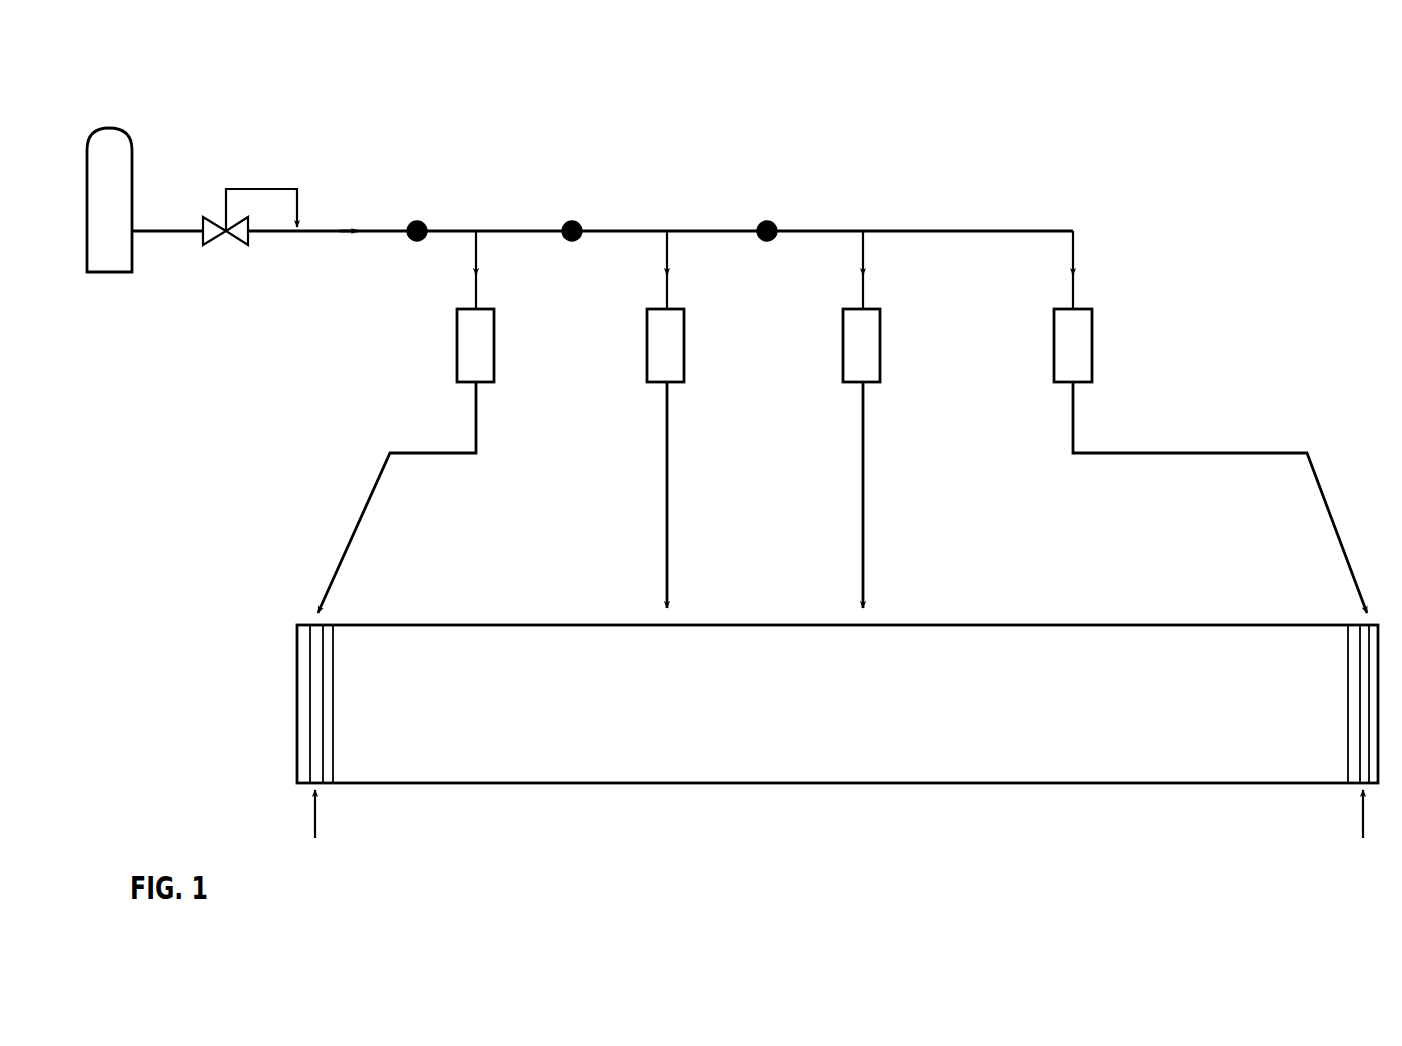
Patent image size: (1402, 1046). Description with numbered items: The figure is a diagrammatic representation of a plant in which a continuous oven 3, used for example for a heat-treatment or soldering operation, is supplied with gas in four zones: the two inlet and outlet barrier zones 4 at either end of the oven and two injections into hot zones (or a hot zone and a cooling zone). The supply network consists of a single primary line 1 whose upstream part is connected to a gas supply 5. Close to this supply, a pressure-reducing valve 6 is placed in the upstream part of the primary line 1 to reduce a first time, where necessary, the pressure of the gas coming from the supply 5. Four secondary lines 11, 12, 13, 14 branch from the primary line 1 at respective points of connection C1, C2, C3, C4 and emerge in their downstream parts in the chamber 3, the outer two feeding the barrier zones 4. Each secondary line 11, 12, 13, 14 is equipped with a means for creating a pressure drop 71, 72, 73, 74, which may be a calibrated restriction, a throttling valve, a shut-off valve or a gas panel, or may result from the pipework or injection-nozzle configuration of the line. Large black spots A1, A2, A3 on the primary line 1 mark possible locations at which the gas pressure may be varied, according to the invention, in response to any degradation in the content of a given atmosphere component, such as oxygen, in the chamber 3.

The primary line 1 is at (163, 227).
The continuous oven 3 is at (837, 704).
The inlet and outlet barrier zones 4 is at (837, 836).
The gas supply 5 is at (117, 124).
The pressure-reducing valve 6 is at (236, 250).
The possible location for varying gas pressure A1 is at (420, 222).
The possible location for varying gas pressure A2 is at (577, 222).
The possible location for varying gas pressure A3 is at (771, 222).
The point of connection C1 is at (478, 225).
The point of connection C2 is at (669, 225).
The point of connection C3 is at (865, 225).
The point of connection C4 is at (1076, 225).
The means for creating a pressure drop 71 is at (498, 347).
The means for creating a pressure drop 72 is at (689, 342).
The means for creating a pressure drop 73 is at (885, 342).
The means for creating a pressure drop 74 is at (1097, 340).
The secondary line 11 is at (480, 426).
The secondary line 12 is at (670, 448).
The secondary line 13 is at (866, 446).
The secondary line 14 is at (1200, 450).